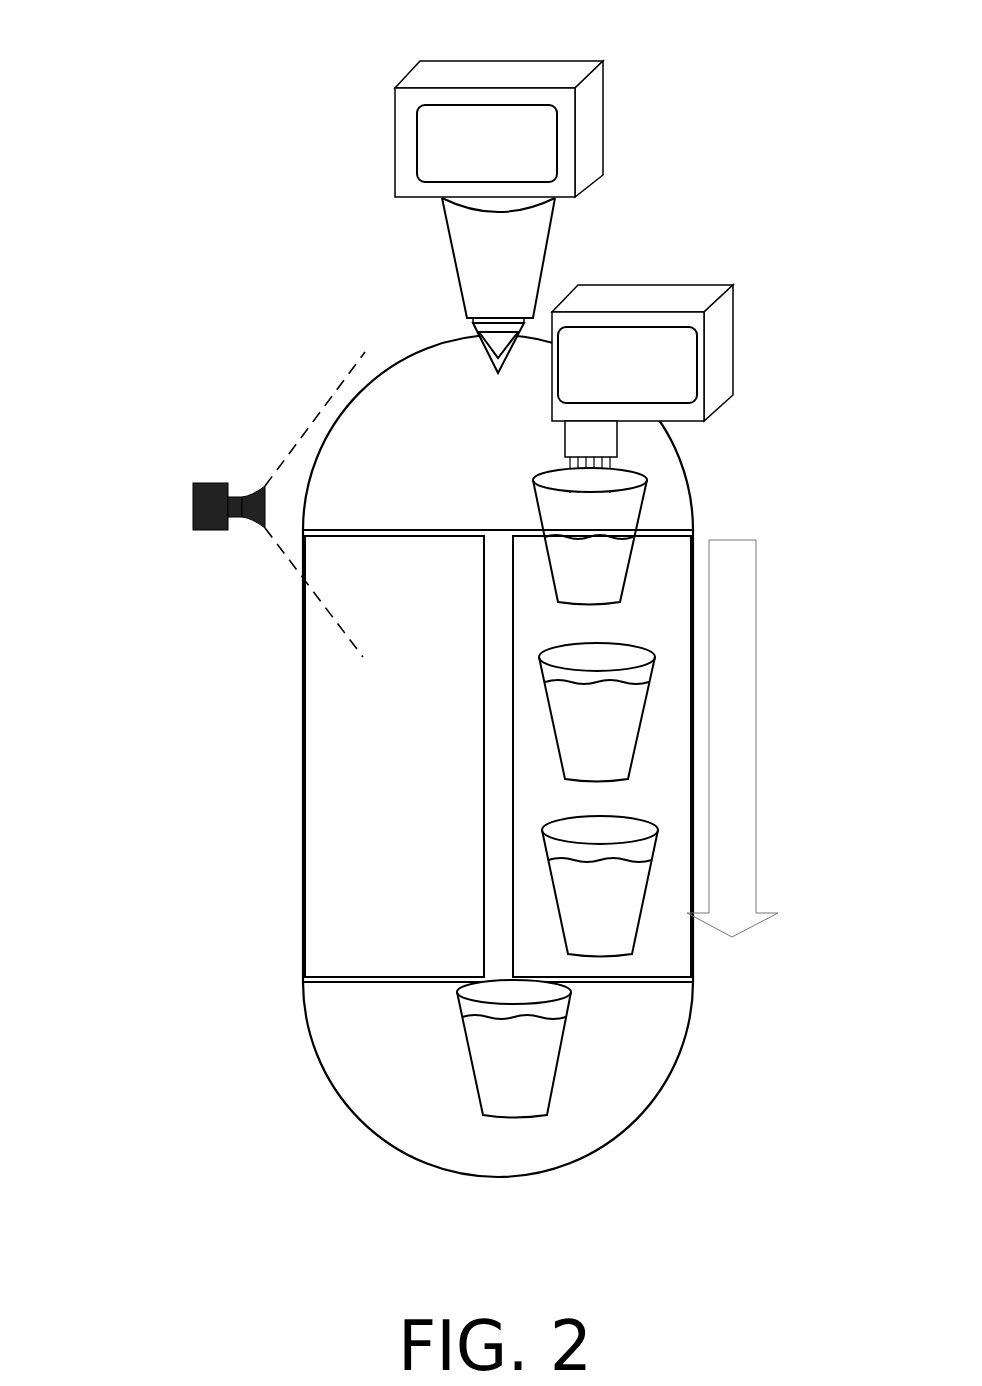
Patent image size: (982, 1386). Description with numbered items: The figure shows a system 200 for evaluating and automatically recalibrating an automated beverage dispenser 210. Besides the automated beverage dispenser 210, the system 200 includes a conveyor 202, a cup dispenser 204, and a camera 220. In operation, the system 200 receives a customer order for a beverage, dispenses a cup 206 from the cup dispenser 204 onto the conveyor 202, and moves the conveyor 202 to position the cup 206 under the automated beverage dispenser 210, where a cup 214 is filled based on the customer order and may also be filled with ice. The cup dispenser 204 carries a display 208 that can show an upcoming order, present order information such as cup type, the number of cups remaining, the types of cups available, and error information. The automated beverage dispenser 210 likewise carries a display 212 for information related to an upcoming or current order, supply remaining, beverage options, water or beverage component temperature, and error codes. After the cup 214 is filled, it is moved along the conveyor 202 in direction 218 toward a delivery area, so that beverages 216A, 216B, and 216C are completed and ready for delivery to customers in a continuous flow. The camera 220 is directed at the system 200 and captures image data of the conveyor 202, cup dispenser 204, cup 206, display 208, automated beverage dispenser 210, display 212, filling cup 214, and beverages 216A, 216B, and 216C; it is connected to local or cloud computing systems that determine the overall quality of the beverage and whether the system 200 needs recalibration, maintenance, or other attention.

The system 200 is at (176, 232).
The conveyor 202 is at (317, 765).
The cup dispenser 204 is at (576, 65).
The cup 206 is at (545, 260).
The display 208 is at (538, 128).
The automated beverage dispenser 210 is at (692, 282).
The display 212 is at (678, 352).
The cup 214 is at (571, 593).
The beverage 216A is at (570, 723).
The beverage 216B is at (573, 896).
The beverage 216C is at (487, 1058).
The direction 218 is at (738, 560).
The camera 220 is at (213, 532).